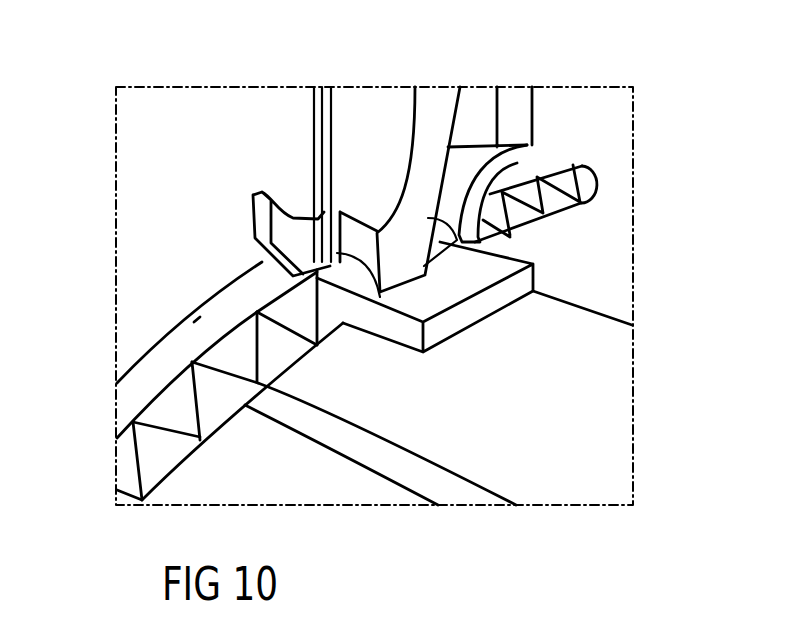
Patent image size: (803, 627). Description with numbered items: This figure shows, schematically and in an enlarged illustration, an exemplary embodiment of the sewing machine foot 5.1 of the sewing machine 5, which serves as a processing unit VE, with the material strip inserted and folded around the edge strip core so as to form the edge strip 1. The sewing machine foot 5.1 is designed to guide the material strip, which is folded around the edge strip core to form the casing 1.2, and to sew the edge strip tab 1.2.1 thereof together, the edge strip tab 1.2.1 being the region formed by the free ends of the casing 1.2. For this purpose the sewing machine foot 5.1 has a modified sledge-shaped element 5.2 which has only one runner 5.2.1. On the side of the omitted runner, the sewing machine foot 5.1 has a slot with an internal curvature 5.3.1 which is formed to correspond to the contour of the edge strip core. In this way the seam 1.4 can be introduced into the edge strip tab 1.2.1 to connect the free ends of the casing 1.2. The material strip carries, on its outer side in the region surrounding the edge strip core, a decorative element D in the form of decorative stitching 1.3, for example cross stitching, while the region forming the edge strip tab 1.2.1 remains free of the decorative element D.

The edge strip 1 is at (595, 183).
The casing 1.2 is at (584, 186).
The edge strip tab 1.2.1 is at (147, 373).
The decorative stitching 1.3 is at (135, 483).
The seam 1.4 is at (517, 183).
The sewing machine 5 is at (383, 187).
The sewing machine foot 5.1 is at (387, 108).
The sledge-shaped element 5.2 is at (308, 227).
The runner 5.2.1 is at (266, 246).
The internal curvature 5.3.1 is at (458, 281).
The decorative element D is at (196, 321).